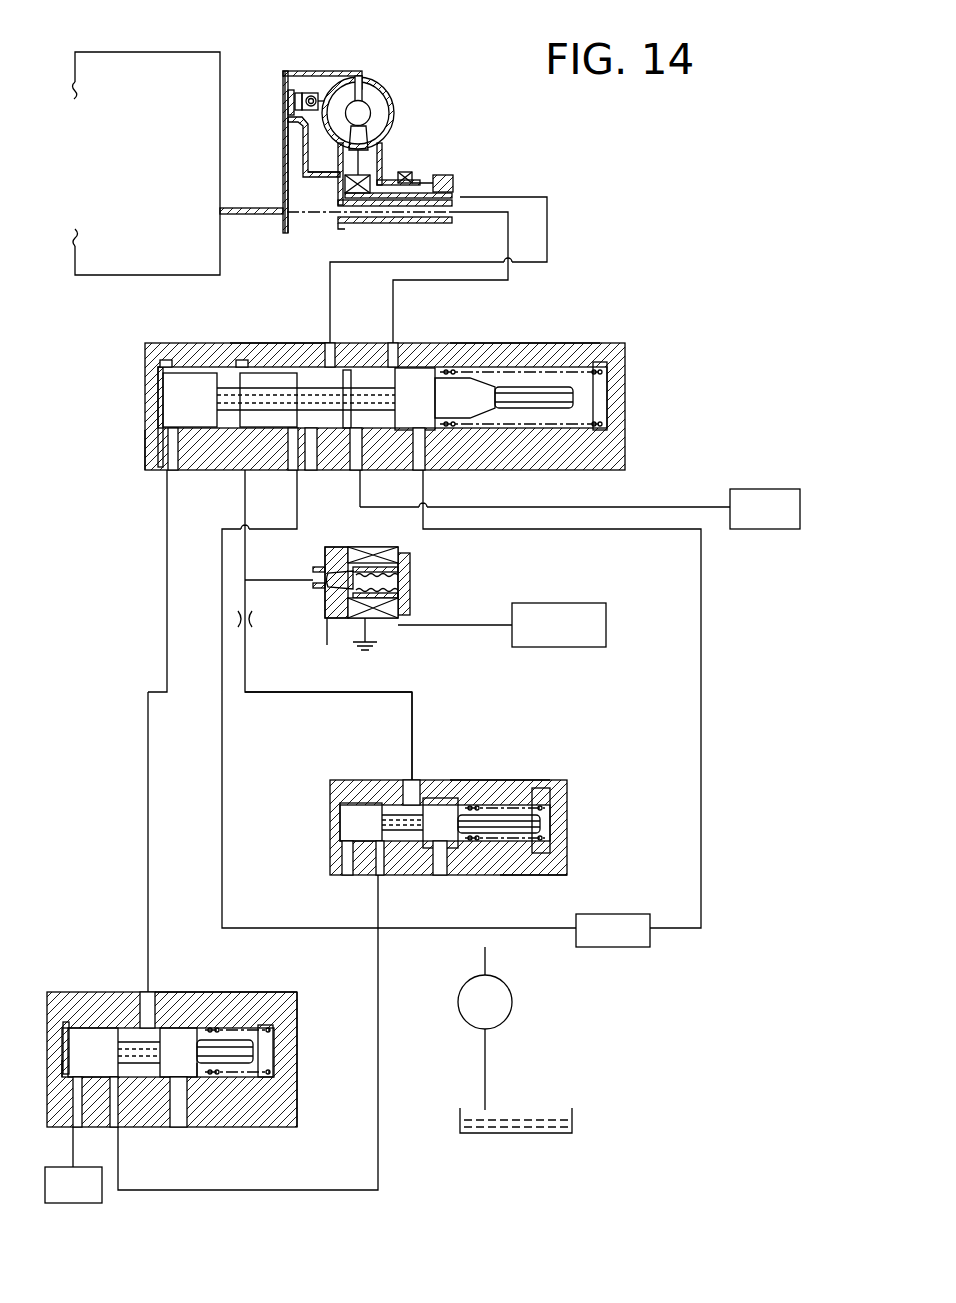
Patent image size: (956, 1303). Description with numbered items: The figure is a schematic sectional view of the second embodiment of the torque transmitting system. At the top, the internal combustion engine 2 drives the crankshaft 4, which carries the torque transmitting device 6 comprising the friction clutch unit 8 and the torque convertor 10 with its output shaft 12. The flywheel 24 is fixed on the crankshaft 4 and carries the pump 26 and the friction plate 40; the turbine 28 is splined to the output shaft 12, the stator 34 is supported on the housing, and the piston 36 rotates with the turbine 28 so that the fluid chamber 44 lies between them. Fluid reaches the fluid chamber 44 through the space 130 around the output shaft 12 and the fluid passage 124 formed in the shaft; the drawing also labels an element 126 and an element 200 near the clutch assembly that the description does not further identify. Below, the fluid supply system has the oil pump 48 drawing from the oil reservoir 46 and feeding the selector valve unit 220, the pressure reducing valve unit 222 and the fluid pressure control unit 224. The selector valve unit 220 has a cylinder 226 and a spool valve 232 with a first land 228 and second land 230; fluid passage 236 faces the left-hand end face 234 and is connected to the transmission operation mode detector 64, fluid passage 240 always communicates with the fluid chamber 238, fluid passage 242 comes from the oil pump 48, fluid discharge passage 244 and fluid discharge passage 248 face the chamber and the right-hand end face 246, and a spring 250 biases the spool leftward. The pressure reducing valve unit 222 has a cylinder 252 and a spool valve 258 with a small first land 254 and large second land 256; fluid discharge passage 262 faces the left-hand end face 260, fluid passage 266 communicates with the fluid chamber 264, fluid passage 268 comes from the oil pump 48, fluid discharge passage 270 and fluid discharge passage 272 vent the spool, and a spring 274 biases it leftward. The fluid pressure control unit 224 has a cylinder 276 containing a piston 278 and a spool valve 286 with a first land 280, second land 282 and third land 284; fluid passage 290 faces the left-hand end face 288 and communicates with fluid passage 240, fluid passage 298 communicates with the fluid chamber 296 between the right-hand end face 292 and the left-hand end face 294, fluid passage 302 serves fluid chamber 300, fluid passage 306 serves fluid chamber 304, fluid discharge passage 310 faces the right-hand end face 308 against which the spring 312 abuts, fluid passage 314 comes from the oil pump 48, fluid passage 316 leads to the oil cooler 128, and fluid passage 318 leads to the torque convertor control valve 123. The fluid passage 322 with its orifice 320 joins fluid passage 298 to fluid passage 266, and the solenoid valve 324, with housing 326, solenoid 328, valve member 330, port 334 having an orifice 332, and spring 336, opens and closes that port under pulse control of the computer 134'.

The internal combustion engine 2 is at (195, 62).
The crankshaft 4 is at (252, 216).
The torque transmitting device 6 is at (313, 62).
The friction clutch unit 8 is at (292, 83).
The torque convertor 10 is at (386, 74).
The output shaft 12 is at (440, 223).
The flywheel 24 is at (283, 126).
The pump 26 is at (380, 100).
The turbine 28 is at (345, 96).
The stator 34 is at (370, 140).
The piston 36 is at (304, 150).
The friction plate 40 is at (287, 101).
The fluid chamber 44 is at (327, 157).
The oil reservoir 46 is at (540, 1135).
The oil pump 48 is at (485, 1028).
The transmission operation mode detector 64 is at (73, 1185).
The torque convertor control valve 123 is at (613, 930).
The fluid passage 124 is at (400, 223).
The shaft 126 is at (297, 173).
The oil cooler 128 is at (765, 509).
The space 130 is at (430, 182).
The computer 134' is at (502, 625).
The sensor 200 is at (317, 90).
The selector valve unit 220 is at (90, 962).
The pressure reducing valve unit 222 is at (568, 782).
The fluid pressure control unit 224 is at (158, 490).
The cylinder 226 is at (228, 1020).
The first land 228 is at (66, 1022).
The second land 230 is at (192, 1033).
The spool valve 232 is at (240, 1043).
The left-hand end face 234 is at (67, 1073).
The fluid passage 236 is at (70, 1107).
The fluid chamber 238 is at (116, 1030).
The fluid passage 240 is at (147, 1003).
The fluid passage 242 is at (115, 1097).
The fluid discharge passage 244 is at (177, 1107).
The right-hand end face 246 is at (203, 1053).
The fluid discharge passage 248 is at (283, 1105).
The spring 250 is at (273, 1080).
The cylinder 252 is at (492, 780).
The first land 254 is at (362, 803).
The second land 256 is at (440, 798).
The spool valve 258 is at (495, 834).
The left-hand end face 260 is at (340, 812).
The fluid discharge passage 262 is at (348, 875).
The fluid chamber 264 is at (405, 790).
The fluid passage 266 is at (420, 785).
The fluid passage 268 is at (383, 875).
The fluid discharge passage 270 is at (440, 875).
The fluid discharge passage 272 is at (545, 875).
The spring 274 is at (550, 840).
The cylinder 276 is at (292, 343).
The piston 278 is at (160, 415).
The first land 280 is at (275, 372).
The second land 282 is at (348, 370).
The third land 284 is at (415, 368).
The spool valve 286 is at (478, 345).
The left-hand end face 288 is at (158, 378).
The fluid passage 290 is at (165, 440).
The right-hand end face 292 is at (168, 362).
The left-hand end face 294 is at (241, 360).
The fluid chamber 296 is at (191, 400).
The fluid passage 298 is at (215, 465).
The fluid chamber 300 is at (311, 462).
The fluid passage 302 is at (332, 345).
The fluid chamber 304 is at (408, 462).
The fluid passage 306 is at (395, 345).
The right-hand end face 308 is at (455, 380).
The fluid discharge passage 310 is at (612, 438).
The spring 312 is at (605, 398).
The fluid passage 314 is at (293, 470).
The fluid passage 316 is at (356, 472).
The fluid passage 318 is at (425, 455).
The orifice 320 is at (253, 628).
The fluid passage 322 is at (280, 694).
The solenoid valve 324 is at (425, 573).
The housing 326 is at (402, 552).
The solenoid 328 is at (380, 620).
The valve member 330 is at (362, 642).
The orifice 332 is at (312, 586).
The port 334 is at (310, 575).
The spring 336 is at (400, 590).